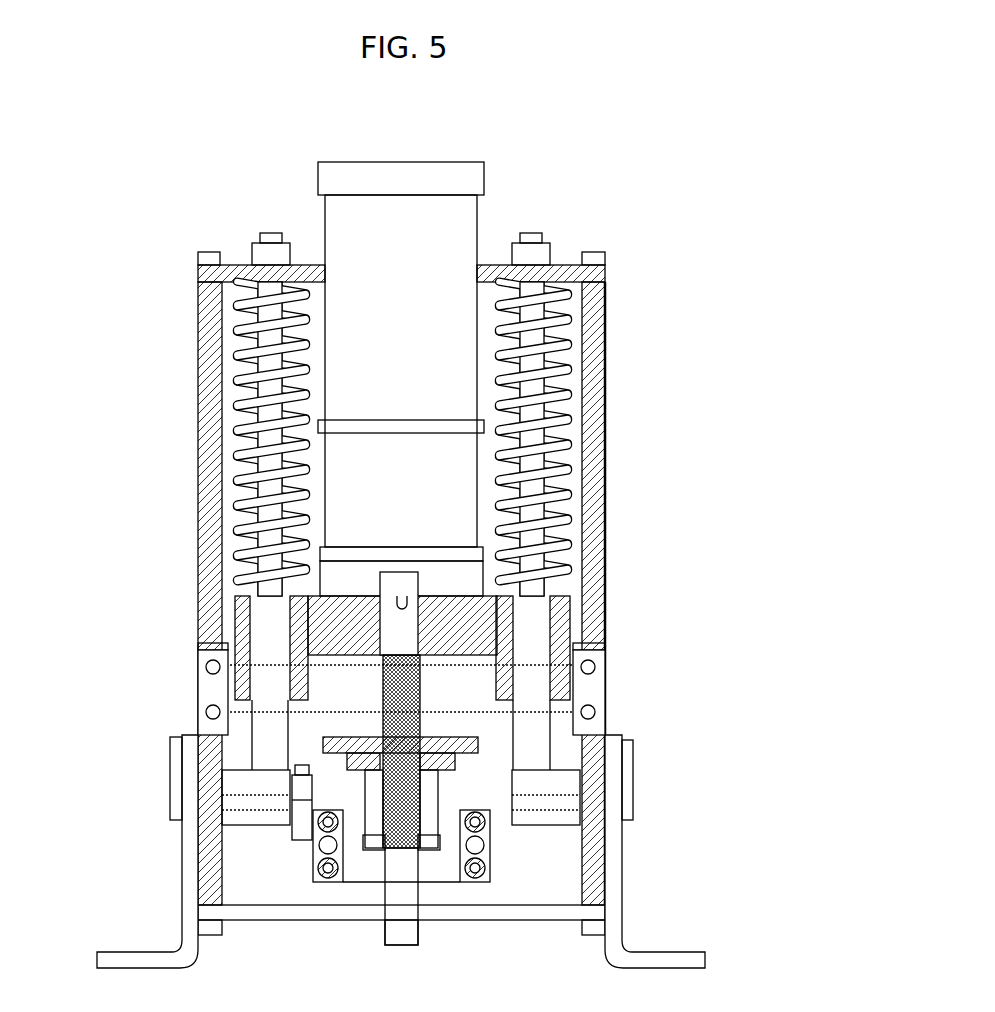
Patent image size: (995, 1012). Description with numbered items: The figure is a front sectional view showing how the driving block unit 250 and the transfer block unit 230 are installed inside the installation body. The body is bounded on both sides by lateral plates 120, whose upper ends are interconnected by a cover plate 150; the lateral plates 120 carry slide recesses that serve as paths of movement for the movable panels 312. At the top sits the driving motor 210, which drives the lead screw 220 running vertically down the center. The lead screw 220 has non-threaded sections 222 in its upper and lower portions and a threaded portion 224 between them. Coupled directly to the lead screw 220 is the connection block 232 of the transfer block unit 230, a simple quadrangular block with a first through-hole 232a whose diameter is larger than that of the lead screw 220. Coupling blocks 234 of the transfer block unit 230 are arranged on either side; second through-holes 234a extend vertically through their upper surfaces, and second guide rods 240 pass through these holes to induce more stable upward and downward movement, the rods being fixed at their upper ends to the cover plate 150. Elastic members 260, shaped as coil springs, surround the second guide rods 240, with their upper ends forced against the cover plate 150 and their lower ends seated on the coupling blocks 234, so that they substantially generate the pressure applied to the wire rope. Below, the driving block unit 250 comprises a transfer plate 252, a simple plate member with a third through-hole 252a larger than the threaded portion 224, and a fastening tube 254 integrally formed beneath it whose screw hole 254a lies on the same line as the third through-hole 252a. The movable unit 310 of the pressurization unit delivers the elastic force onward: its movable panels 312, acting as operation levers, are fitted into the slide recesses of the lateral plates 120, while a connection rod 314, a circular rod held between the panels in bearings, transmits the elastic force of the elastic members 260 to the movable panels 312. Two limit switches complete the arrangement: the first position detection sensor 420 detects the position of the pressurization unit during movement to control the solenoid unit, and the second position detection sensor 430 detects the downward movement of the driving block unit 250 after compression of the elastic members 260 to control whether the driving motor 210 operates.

The lateral plate 120 is at (605, 335).
The cover plate 150 is at (570, 265).
The driving motor 210 is at (340, 227).
The lead screw 220 is at (514, 758).
The non-threaded section 222 is at (410, 630).
The threaded portion 224 is at (410, 700).
The transfer block unit 230 is at (340, 628).
The connection block 232 is at (287, 577).
The first through-hole 232a is at (298, 590).
The coupling block 234 is at (250, 627).
The second through-hole 234a is at (196, 643).
The second guide rod 240 is at (572, 390).
The elastic member 260 is at (575, 455).
The driving block unit 250 is at (499, 802).
The transfer plate 252 is at (478, 738).
The third through-hole 252a is at (450, 763).
The fastening tube 254 is at (580, 810).
The screw hole 254a is at (440, 793).
The movable unit 310 is at (371, 809).
The movable panel 312 is at (208, 690).
The connection rod 314 is at (180, 748).
The first position detection sensor 420 is at (343, 883).
The second position detection sensor 430 is at (265, 827).